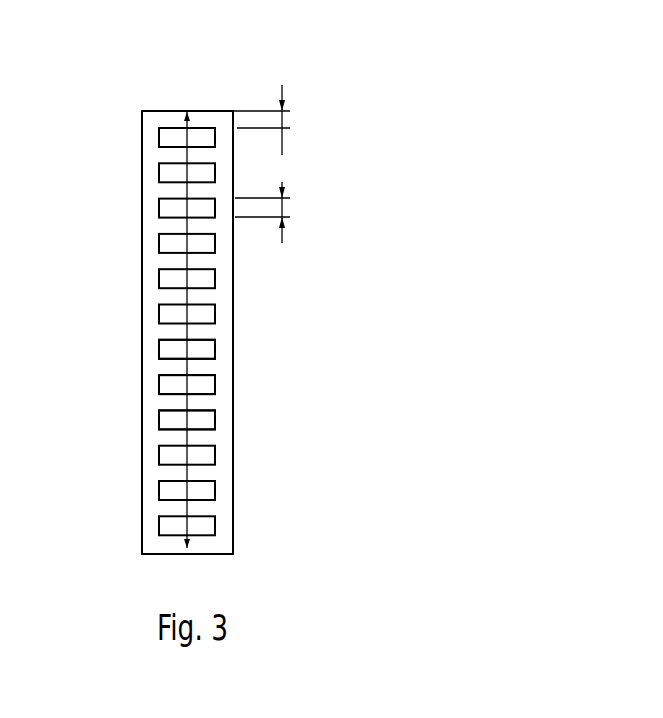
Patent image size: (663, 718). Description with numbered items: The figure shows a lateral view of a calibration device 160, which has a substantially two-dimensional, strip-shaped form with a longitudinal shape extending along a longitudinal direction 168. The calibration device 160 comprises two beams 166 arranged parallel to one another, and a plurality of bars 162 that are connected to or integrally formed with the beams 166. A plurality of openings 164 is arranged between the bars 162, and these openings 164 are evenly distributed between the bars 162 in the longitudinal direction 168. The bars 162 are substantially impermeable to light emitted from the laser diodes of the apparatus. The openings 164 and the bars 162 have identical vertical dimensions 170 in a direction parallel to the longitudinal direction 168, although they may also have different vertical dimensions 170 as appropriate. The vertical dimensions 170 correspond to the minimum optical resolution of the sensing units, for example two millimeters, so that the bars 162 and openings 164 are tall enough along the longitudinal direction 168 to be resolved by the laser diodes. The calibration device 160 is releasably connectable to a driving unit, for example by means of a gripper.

The calibration device 160 is at (274, 288).
The bars 162 is at (203, 367).
The openings 164 is at (172, 348).
The beams 166 is at (142, 279).
The longitudinal direction 168 is at (185, 332).
The vertical dimensions 170 is at (302, 164).